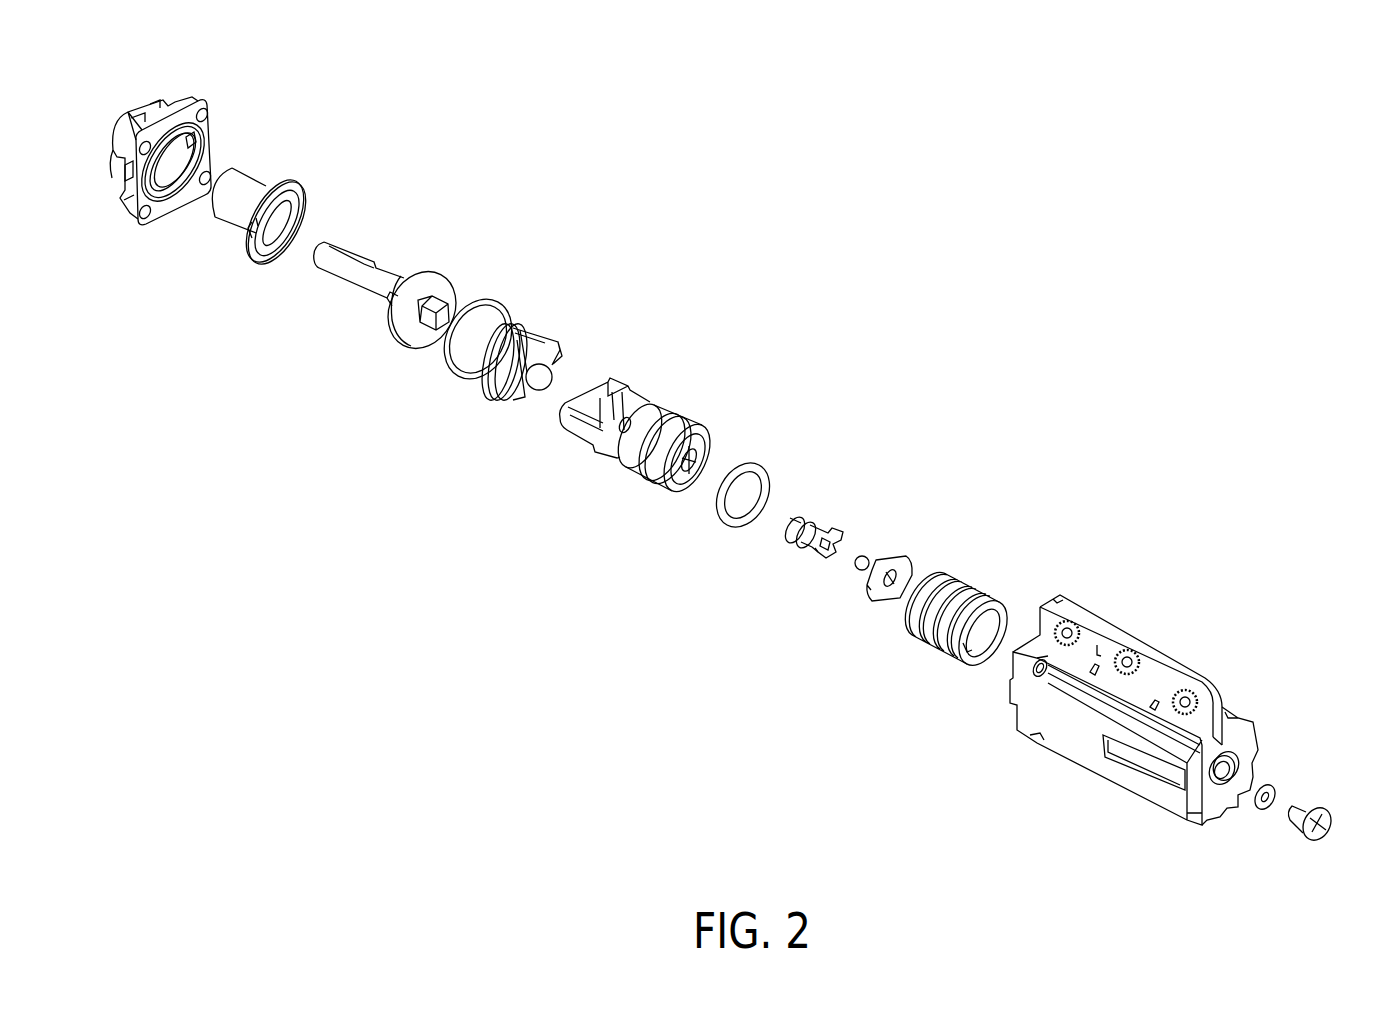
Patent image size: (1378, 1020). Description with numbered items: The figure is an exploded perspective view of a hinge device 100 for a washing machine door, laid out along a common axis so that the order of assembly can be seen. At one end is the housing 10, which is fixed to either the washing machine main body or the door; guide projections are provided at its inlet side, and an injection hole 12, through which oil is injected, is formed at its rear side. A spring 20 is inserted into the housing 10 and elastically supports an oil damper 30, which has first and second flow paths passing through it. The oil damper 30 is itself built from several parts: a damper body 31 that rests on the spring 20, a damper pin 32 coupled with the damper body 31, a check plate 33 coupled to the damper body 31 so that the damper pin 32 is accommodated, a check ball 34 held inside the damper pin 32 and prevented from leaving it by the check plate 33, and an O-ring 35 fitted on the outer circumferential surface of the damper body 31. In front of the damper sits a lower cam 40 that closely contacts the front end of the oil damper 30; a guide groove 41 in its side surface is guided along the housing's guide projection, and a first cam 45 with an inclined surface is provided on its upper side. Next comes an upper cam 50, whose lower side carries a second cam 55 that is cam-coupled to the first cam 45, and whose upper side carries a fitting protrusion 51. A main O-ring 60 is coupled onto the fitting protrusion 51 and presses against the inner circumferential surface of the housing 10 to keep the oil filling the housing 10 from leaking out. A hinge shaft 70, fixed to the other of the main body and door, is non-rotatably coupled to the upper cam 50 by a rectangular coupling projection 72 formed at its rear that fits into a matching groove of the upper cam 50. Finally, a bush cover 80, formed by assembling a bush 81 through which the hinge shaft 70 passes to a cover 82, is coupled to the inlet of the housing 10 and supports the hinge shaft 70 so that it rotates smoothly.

The hinge device 100 is at (940, 232).
The housing 10 is at (1170, 630).
The injection hole 12 is at (1228, 758).
The spring 20 is at (980, 568).
The oil damper 30 is at (948, 476).
The damper body 31 is at (692, 428).
The damper pin 32 is at (818, 523).
The check plate 33 is at (905, 560).
The check ball 34 is at (868, 557).
The O-ring 35 is at (760, 465).
The lower cam 40 is at (655, 367).
The guide groove 41 is at (583, 438).
The first cam 45 is at (568, 414).
The upper cam 50 is at (567, 325).
The fitting protrusion 51 is at (488, 382).
The second cam 55 is at (515, 405).
The main O-ring 60 is at (517, 278).
The hinge shaft 70 is at (422, 232).
The rectangular coupling projection 72 is at (438, 322).
The bush cover 80 is at (311, 87).
The bush 81 is at (247, 183).
The cover 82 is at (201, 102).